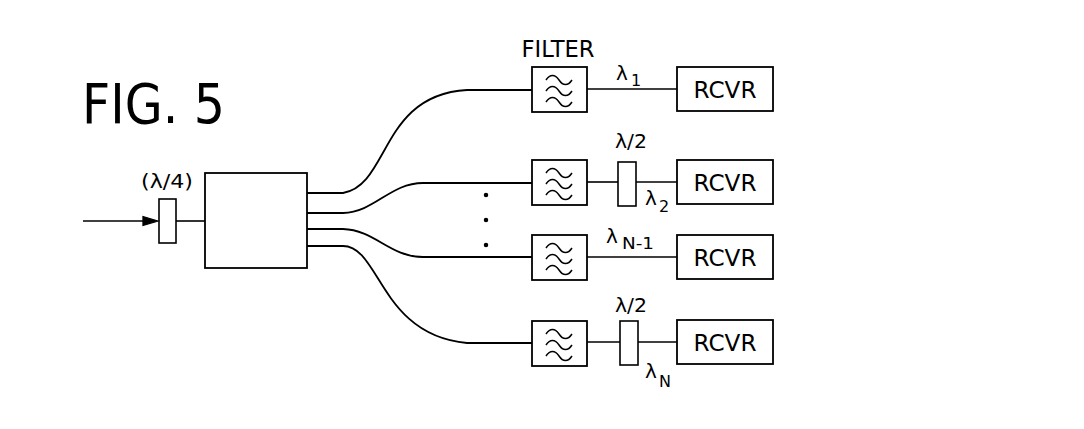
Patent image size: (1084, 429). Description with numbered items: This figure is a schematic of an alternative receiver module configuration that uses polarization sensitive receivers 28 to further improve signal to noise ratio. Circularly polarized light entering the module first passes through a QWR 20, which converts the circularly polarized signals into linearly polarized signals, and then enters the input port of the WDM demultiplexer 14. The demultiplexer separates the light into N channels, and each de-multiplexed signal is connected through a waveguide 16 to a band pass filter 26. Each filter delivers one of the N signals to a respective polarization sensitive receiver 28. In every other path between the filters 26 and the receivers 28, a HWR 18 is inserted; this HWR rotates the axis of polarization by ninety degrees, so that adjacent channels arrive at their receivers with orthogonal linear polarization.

The WDM demultiplexer 14 is at (257, 268).
The waveguide 16 is at (438, 98).
The HWR 18 is at (637, 172).
The QWR 20 is at (167, 244).
The band pass filter 26 is at (558, 113).
The polarization sensitive receiver 28 is at (725, 111).